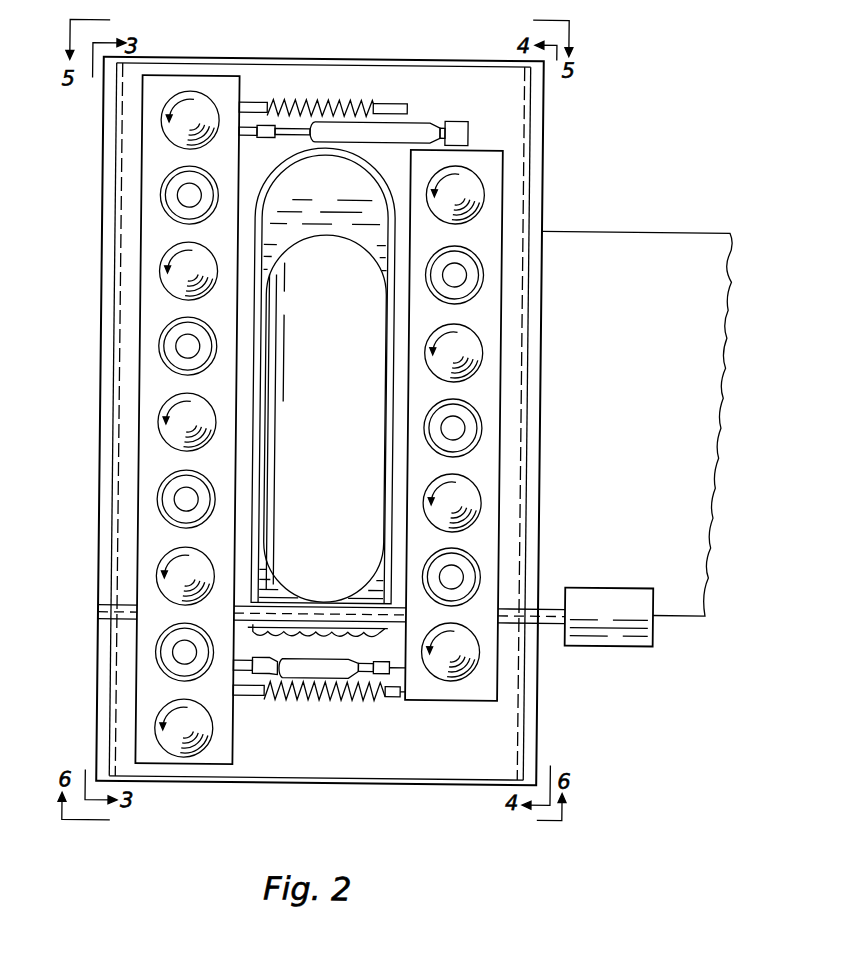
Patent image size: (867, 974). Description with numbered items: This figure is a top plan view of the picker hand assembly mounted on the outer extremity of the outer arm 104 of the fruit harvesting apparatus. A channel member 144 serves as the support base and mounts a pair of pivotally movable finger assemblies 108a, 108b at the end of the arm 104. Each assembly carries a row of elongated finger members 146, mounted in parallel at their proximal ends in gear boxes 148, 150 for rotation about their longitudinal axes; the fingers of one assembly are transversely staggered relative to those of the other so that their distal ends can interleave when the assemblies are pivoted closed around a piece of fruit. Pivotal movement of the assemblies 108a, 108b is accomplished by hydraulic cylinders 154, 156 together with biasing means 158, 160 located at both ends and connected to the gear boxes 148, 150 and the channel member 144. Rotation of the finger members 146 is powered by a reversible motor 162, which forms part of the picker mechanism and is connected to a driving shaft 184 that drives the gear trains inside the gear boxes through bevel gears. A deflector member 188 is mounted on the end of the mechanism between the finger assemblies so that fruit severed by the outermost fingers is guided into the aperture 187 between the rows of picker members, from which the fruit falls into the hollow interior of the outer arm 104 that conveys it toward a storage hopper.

The outer arm 104 is at (632, 433).
The finger assembly 108a is at (212, 562).
The finger assembly 108b is at (428, 352).
The channel member 144 is at (333, 784).
The finger members 146 is at (329, 426).
The gear box 148 is at (236, 739).
The gear box 150 is at (434, 700).
The hydraulic cylinder 154 is at (338, 658).
The hydraulic cylinder 156 is at (410, 122).
The biasing means 158 is at (326, 699).
The biasing means 160 is at (330, 104).
The reversible motor 162 is at (616, 645).
The driving shaft 184 is at (546, 604).
The aperture 187 is at (340, 342).
The deflector member 188 is at (290, 166).